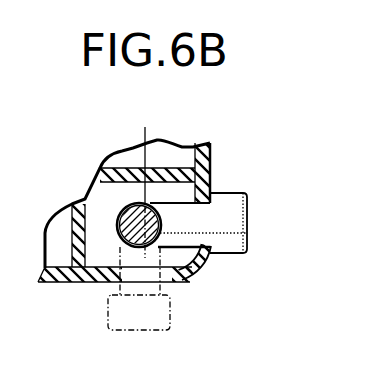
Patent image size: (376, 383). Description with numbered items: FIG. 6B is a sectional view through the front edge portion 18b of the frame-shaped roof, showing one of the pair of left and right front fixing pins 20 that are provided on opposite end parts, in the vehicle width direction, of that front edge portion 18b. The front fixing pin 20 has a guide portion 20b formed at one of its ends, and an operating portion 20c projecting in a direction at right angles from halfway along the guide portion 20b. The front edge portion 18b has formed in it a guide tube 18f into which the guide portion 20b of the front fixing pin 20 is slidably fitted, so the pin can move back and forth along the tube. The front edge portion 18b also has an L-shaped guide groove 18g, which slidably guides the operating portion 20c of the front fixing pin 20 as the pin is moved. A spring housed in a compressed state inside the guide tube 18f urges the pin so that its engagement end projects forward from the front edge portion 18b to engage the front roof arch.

The front edge portion 18b is at (221, 167).
The guide tube 18f is at (143, 198).
The L-shaped guide groove 18g is at (219, 240).
The front fixing pin 20 is at (114, 203).
The guide portion 20b is at (121, 241).
The operating portion 20c is at (232, 218).